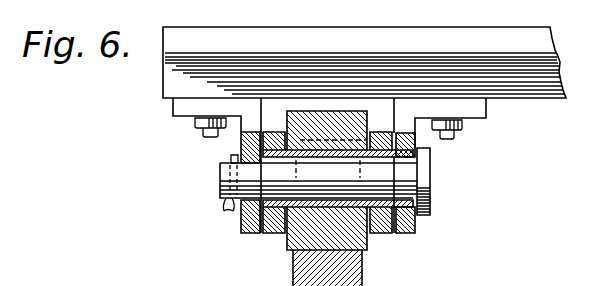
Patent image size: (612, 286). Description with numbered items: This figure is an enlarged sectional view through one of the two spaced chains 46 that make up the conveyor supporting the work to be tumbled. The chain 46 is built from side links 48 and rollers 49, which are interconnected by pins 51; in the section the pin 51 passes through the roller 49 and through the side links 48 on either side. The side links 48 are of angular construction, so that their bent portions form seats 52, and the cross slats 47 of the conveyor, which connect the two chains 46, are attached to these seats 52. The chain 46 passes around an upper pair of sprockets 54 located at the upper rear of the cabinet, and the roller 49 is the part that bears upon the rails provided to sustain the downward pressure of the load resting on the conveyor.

The chain 46 is at (413, 229).
The cross slat 47 is at (540, 90).
The side link 48 is at (417, 145).
The roller 49 is at (300, 236).
The pin 51 is at (430, 193).
The seat 52 is at (183, 108).
The upper sprocket 54 is at (362, 266).